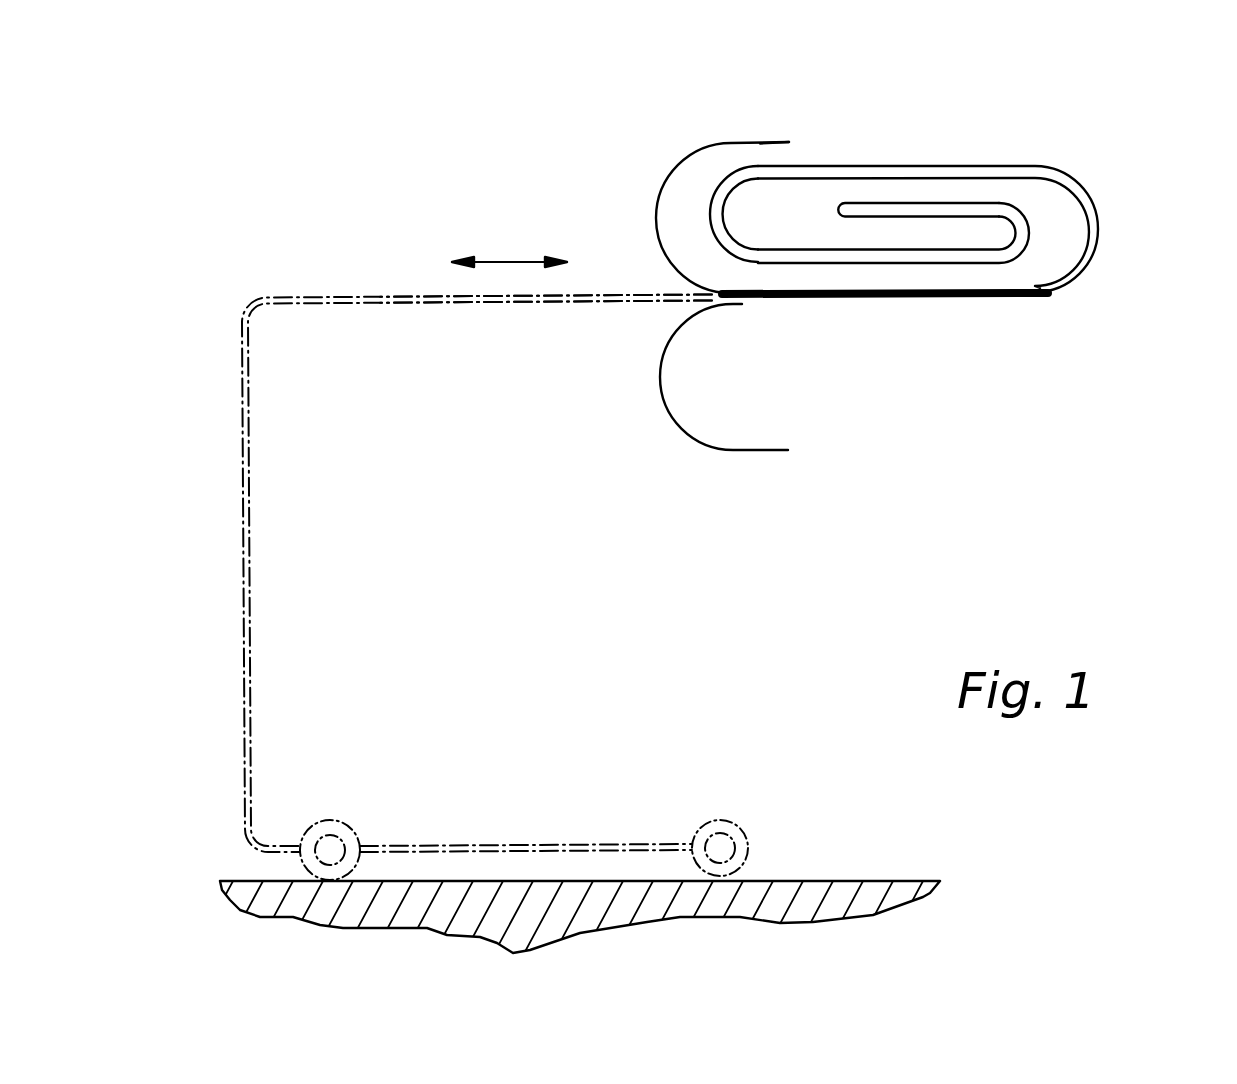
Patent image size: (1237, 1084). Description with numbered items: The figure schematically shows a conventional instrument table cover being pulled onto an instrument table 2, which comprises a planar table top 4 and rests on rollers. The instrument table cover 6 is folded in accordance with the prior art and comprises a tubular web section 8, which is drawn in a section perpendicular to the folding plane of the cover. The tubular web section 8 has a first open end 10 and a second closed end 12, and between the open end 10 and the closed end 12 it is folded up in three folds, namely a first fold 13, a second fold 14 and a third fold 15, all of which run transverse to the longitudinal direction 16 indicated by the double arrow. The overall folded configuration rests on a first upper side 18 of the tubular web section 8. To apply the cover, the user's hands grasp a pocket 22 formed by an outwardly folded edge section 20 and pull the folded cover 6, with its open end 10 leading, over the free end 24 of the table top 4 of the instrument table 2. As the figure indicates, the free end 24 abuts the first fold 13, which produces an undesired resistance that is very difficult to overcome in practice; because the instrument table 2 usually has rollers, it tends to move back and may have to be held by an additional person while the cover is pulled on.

The instrument table 2 is at (373, 297).
The table top 4 is at (421, 305).
The instrument table cover 6 is at (1080, 158).
The tubular web section 8 is at (1067, 288).
The first open end 10 is at (653, 320).
The second closed end 12 is at (841, 210).
The first fold 13 is at (1097, 222).
The second fold 14 is at (710, 216).
The third fold 15 is at (1028, 238).
The longitudinal direction 16 is at (512, 260).
The first upper side 18 is at (865, 292).
The outwardly folded edge section 20 is at (737, 142).
The pocket 22 is at (792, 154).
The free end 24 is at (1032, 303).